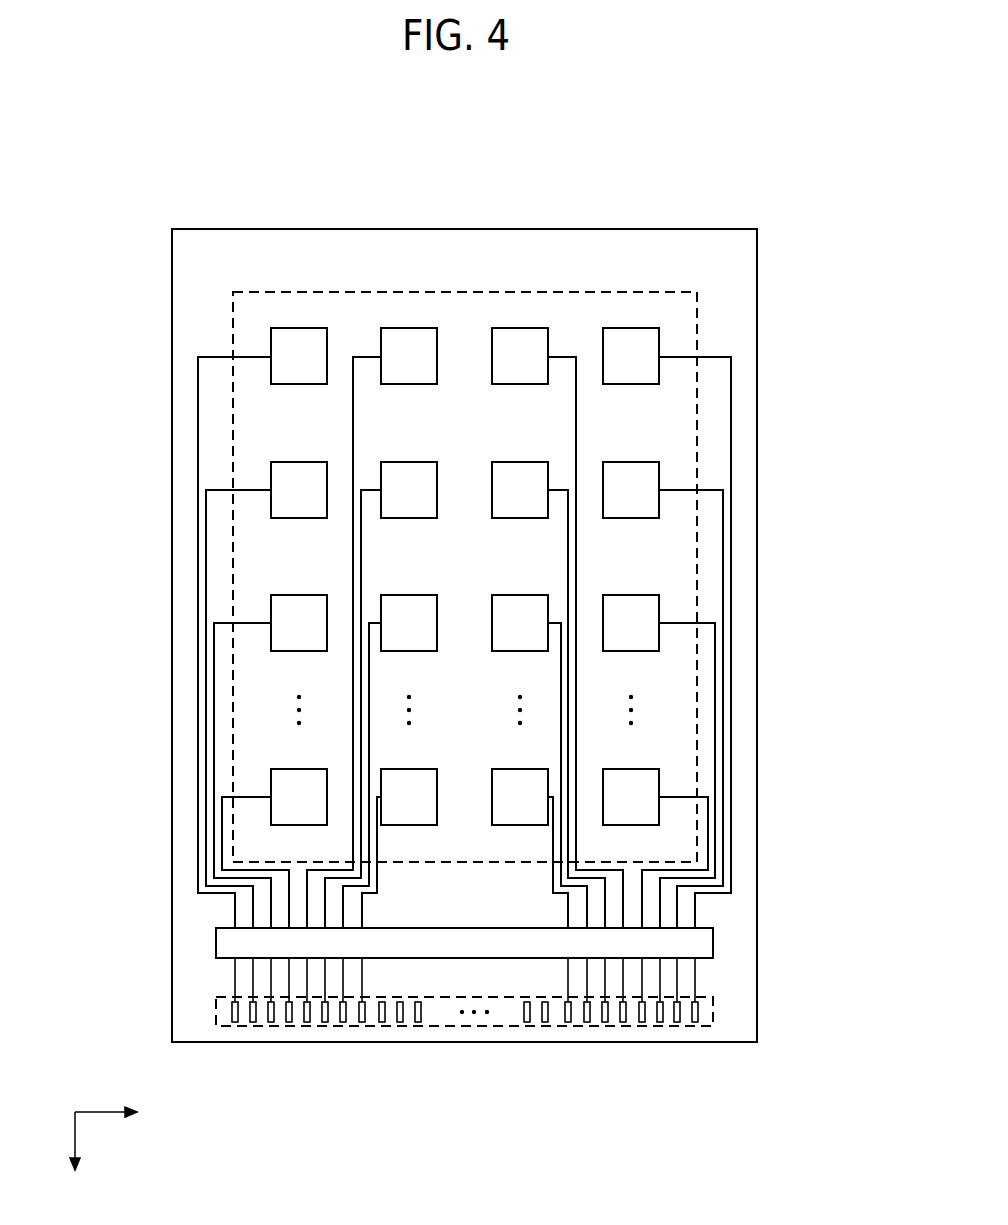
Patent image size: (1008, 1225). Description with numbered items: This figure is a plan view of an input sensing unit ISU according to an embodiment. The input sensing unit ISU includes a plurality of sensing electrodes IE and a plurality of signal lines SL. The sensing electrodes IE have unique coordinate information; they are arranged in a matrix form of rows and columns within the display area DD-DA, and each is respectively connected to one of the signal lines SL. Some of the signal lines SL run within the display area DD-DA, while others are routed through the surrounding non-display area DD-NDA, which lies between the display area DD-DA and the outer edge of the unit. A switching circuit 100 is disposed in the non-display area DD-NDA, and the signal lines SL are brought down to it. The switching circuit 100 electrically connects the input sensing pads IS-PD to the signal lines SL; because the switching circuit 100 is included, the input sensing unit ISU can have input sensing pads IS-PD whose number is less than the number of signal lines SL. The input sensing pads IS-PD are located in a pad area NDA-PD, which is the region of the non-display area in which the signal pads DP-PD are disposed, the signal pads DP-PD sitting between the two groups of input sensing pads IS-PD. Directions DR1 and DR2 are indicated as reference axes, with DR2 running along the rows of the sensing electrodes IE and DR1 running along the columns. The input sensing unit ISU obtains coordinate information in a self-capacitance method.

The input sensing unit ISU is at (706, 159).
The sensing electrode IE is at (298, 328).
The display area DD-DA is at (697, 322).
The non-display area DD-NDA is at (743, 388).
The signal line SL is at (731, 855).
The switching circuit 100 is at (713, 940).
The pad area NDA-PD is at (713, 1010).
The input sensing pad IS-PD is at (365, 1047).
The signal pad DP-PD is at (550, 1047).
The first direction DR1 is at (75, 1157).
The second direction DR2 is at (126, 1112).